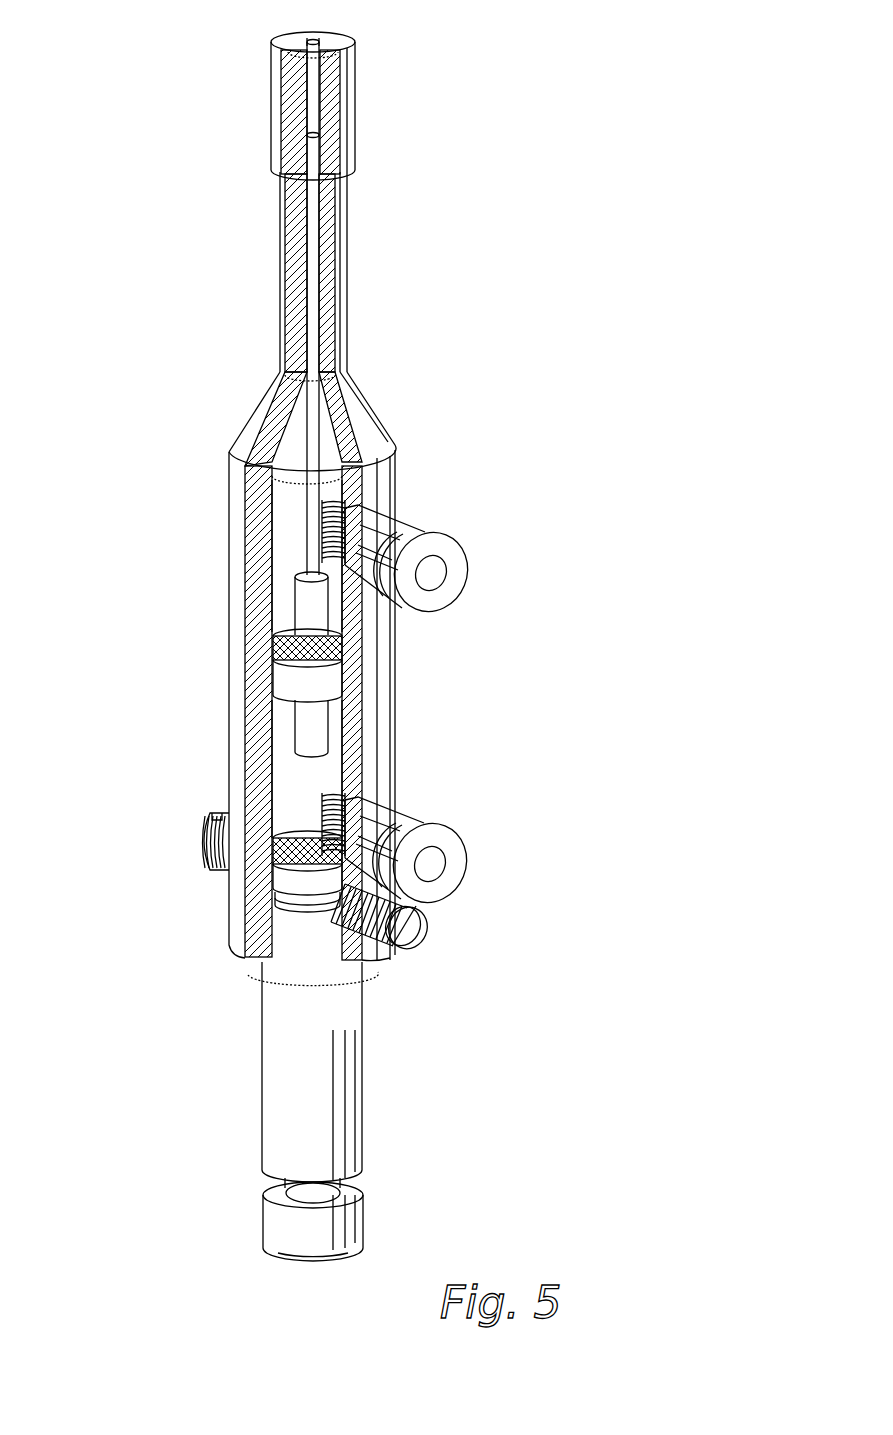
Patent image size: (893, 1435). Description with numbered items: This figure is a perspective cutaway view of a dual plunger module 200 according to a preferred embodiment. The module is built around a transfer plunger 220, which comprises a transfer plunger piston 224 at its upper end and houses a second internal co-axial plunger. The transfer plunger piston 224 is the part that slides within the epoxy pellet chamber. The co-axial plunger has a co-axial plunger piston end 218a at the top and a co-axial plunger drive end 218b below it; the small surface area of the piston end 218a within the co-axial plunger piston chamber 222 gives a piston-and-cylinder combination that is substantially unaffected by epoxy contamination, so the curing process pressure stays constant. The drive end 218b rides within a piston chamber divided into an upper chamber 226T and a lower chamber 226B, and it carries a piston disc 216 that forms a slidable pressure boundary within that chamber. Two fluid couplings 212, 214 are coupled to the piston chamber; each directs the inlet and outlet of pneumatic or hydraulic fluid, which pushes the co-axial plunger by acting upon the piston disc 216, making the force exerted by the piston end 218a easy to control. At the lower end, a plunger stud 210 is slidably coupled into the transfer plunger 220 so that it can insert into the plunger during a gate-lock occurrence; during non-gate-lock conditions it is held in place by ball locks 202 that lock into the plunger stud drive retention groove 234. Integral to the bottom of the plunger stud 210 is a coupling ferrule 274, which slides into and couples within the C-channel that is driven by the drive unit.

The dual plunger module 200 is at (206, 109).
The co-axial plunger piston chamber 222 is at (318, 40).
The transfer plunger piston 224 is at (357, 112).
The co-axial plunger piston end 218a is at (312, 152).
The co-axial plunger drive end 218b is at (310, 497).
The upper chamber 226T is at (282, 527).
The transfer plunger 220 is at (229, 588).
The fluid coupling 212 is at (420, 525).
The piston disc 216 is at (338, 676).
The lower chamber 226B is at (298, 775).
The ball locks 202 is at (210, 838).
The fluid coupling 214 is at (428, 822).
The plunger stud drive retention groove 234 is at (303, 900).
The plunger stud 210 is at (345, 1132).
The coupling ferrule 274 is at (252, 1206).